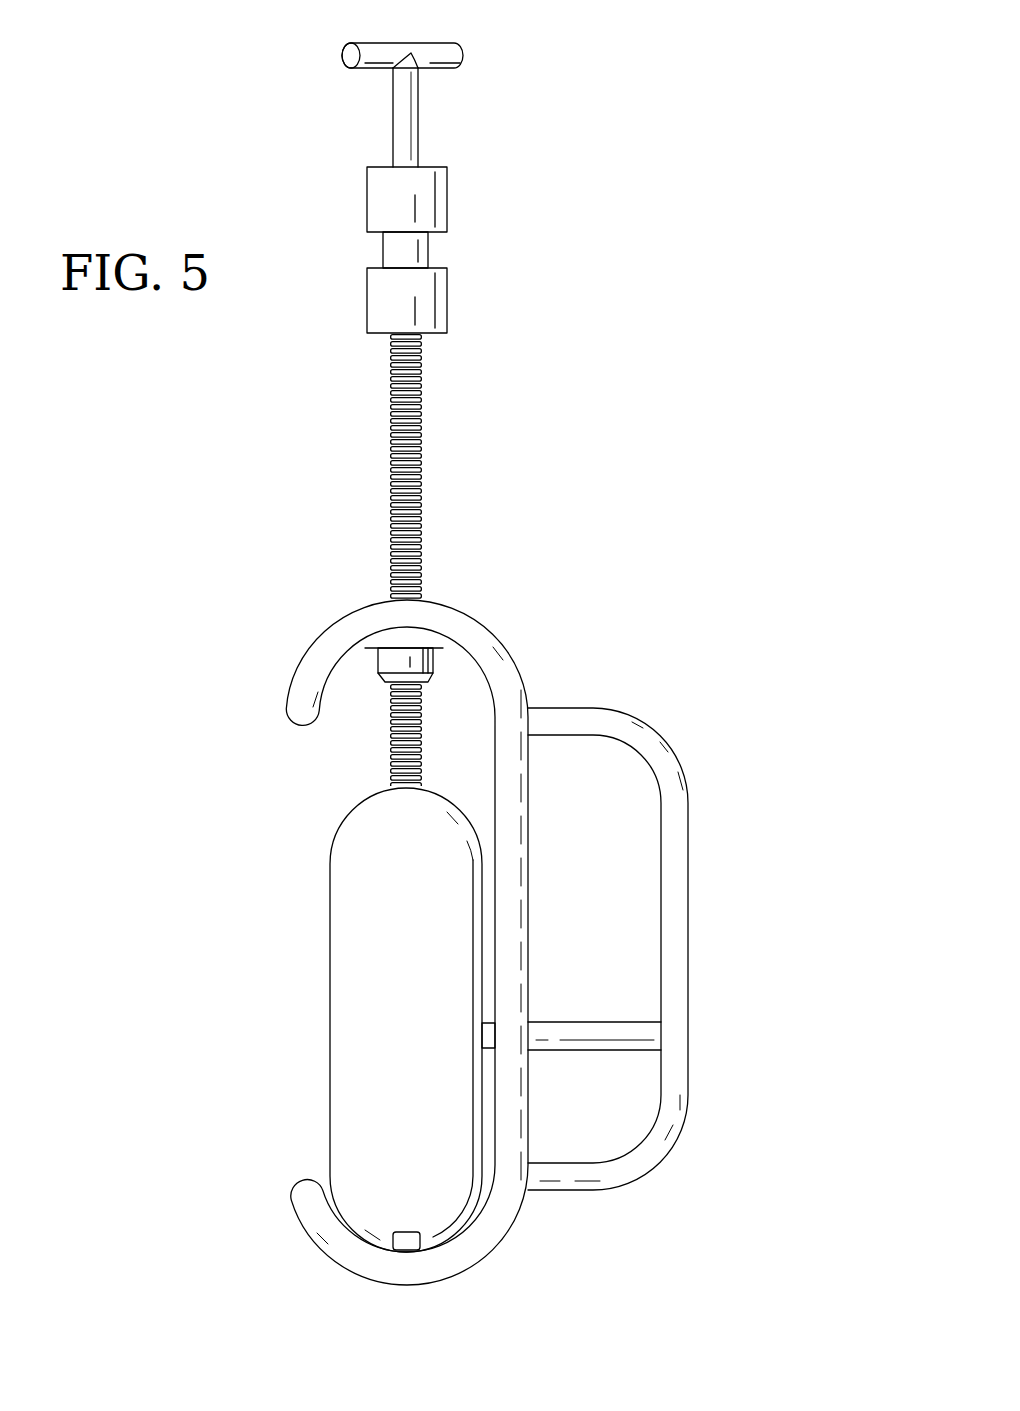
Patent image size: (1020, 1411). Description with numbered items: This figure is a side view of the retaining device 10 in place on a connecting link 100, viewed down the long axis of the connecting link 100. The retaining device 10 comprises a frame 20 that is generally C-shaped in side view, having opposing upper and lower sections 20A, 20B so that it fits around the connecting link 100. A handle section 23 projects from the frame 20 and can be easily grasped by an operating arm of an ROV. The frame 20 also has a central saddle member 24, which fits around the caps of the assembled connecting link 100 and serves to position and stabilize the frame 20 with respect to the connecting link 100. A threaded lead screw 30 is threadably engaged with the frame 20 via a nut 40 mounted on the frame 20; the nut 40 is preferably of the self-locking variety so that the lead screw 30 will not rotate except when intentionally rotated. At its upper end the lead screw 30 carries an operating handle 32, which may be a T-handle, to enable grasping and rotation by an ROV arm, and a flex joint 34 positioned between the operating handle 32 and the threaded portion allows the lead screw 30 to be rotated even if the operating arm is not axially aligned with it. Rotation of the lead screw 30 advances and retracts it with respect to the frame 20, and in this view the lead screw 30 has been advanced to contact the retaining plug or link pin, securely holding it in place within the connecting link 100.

The retaining device 10 is at (597, 557).
The frame 20 is at (498, 671).
The upper section 20A is at (177, 587).
The lower section 20B is at (177, 1160).
The handle section 23 is at (670, 854).
The central saddle member 24 is at (488, 1027).
The lead screw 30 is at (415, 448).
The operating handle 32 is at (453, 57).
The flex joint 34 is at (408, 255).
The nut 40 is at (392, 660).
The connecting link 100 is at (430, 1003).